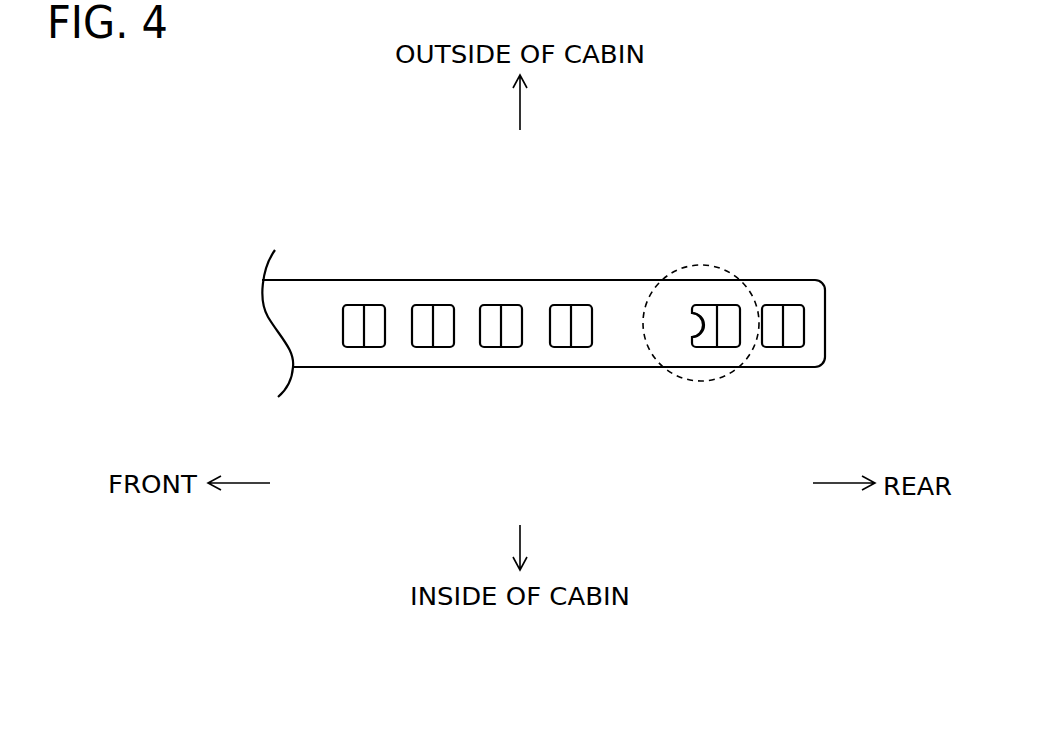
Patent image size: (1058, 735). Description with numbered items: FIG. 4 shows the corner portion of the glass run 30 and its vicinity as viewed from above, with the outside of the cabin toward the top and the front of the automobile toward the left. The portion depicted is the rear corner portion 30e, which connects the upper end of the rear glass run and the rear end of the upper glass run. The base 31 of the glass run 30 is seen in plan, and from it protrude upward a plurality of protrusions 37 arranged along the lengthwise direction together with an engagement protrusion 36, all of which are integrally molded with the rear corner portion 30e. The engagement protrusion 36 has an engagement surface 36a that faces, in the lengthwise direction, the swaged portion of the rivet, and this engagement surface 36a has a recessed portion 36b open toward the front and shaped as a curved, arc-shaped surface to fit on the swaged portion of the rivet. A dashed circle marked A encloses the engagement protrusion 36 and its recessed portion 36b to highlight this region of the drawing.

The glass run 30 is at (404, 268).
The rear corner portion 30e is at (463, 367).
The base 31 is at (322, 355).
The engagement protrusion 36 is at (712, 292).
The engagement surface 36a is at (695, 335).
The recessed portion 36b is at (698, 318).
The protrusions 37 is at (357, 305).
The region A is at (728, 268).